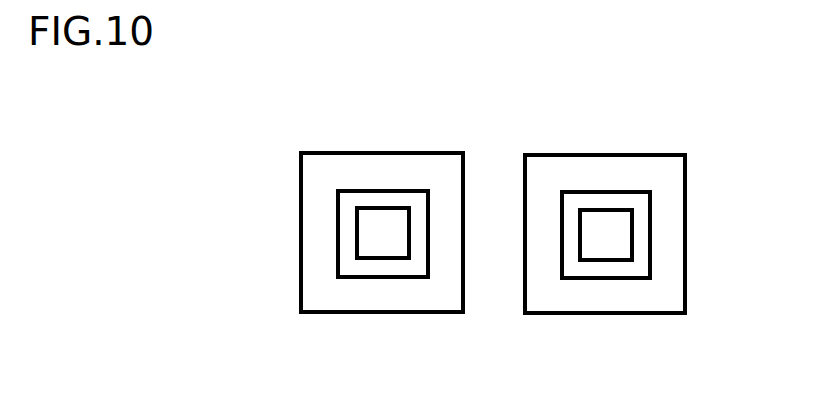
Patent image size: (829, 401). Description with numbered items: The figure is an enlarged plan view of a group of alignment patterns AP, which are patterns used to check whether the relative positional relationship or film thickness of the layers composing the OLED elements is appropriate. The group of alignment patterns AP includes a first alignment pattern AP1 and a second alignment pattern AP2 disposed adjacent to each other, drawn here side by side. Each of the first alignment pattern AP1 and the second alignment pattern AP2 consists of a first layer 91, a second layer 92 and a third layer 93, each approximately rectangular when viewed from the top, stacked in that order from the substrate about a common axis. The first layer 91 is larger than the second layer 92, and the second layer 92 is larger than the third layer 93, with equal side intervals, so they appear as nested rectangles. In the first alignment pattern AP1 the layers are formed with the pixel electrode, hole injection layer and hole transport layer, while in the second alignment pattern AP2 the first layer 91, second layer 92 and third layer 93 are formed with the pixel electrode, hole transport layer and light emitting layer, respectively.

The first layer 91 is at (343, 153).
The second layer 92 is at (371, 191).
The third layer 93 is at (398, 208).
The group of alignment patterns AP is at (268, 142).
The first alignment pattern AP1 is at (430, 312).
The second alignment pattern AP2 is at (655, 313).